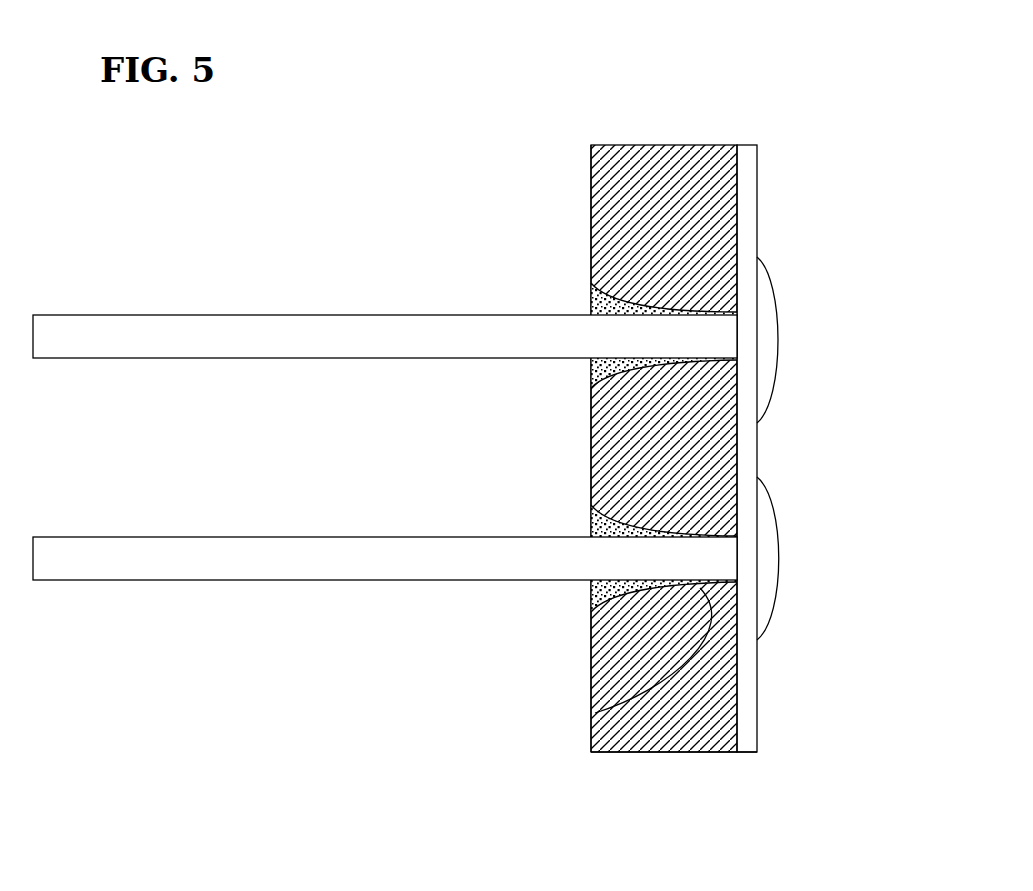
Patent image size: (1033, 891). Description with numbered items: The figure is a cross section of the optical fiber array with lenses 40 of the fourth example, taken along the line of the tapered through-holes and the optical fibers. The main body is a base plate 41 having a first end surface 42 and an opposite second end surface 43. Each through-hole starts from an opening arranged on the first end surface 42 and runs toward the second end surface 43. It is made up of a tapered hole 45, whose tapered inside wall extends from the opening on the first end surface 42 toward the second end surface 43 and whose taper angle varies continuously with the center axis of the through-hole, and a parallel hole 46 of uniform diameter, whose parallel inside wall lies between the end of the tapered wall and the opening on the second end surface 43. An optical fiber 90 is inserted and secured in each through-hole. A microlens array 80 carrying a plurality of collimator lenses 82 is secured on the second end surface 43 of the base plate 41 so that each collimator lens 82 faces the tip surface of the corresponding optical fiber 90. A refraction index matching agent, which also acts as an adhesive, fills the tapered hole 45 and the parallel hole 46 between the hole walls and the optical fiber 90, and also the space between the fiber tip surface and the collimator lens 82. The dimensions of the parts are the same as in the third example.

The optical fiber array with lenses 40 is at (403, 146).
The base plate 41 is at (665, 732).
The first end surface 42 is at (591, 737).
The second end surface 43 is at (715, 735).
The tapered hole 45 is at (590, 588).
The parallel hole 46 is at (592, 713).
The microlens array 80 is at (747, 185).
The collimator lens 82 is at (768, 572).
The optical fiber 90 is at (156, 558).